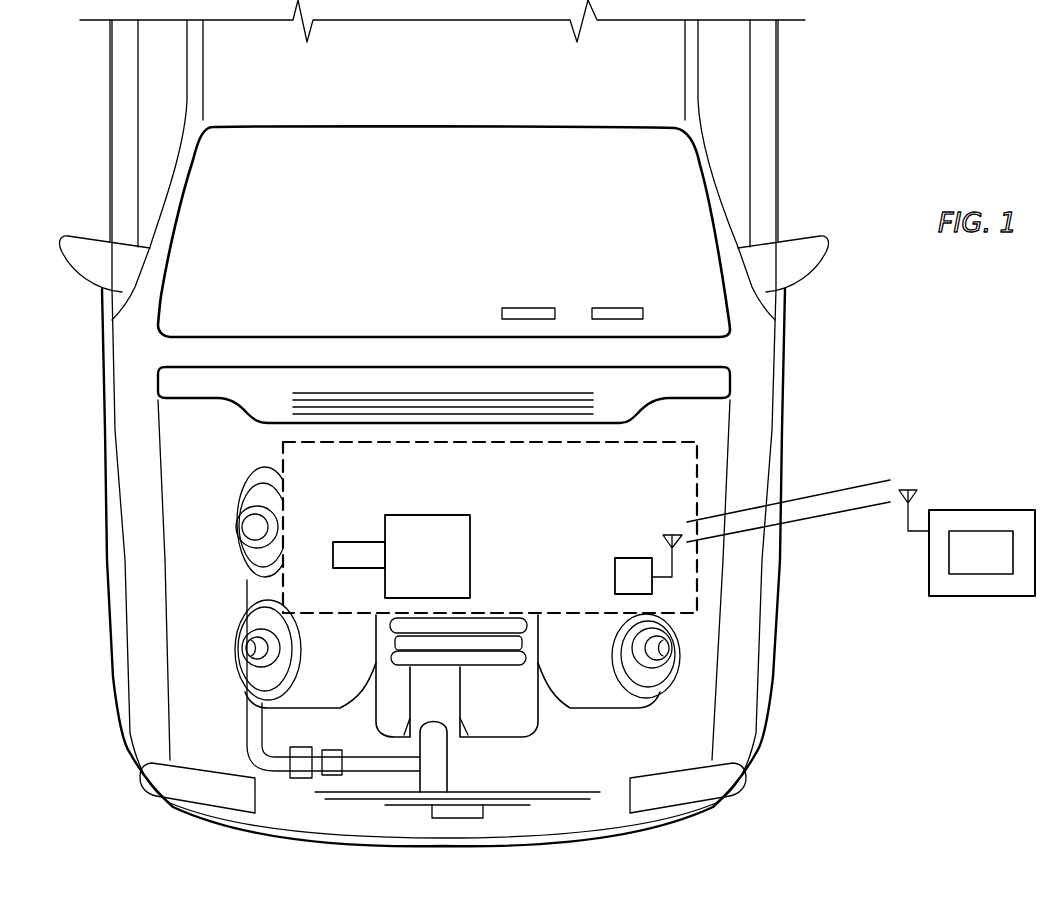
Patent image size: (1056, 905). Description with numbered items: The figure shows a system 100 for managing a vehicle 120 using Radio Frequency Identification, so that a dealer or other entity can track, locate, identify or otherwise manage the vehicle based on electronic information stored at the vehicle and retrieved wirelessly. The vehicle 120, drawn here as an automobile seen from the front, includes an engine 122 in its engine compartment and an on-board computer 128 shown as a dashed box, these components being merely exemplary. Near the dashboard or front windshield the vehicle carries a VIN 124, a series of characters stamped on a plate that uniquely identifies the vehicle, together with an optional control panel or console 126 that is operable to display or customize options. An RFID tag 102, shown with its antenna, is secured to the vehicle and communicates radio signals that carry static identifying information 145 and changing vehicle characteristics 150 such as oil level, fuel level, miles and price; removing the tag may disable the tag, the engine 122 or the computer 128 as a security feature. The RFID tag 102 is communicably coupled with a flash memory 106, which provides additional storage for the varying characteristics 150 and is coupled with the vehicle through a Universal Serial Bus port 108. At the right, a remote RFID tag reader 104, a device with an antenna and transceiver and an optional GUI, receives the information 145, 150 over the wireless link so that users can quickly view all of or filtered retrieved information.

The system 100 is at (931, 339).
The RFID tag 102 is at (613, 570).
The RFID tag reader 104 is at (990, 597).
The flash memory 106 is at (358, 540).
The Universal Serial Bus (USB) port 108 is at (427, 556).
The vehicle 120 is at (108, 150).
The engine 122 is at (556, 716).
The VIN 124 is at (620, 307).
The control panel or console 126 is at (532, 307).
The on-board computer 128 is at (490, 527).
The identifying information 145 is at (833, 485).
The vehicle characteristics 150 is at (833, 513).